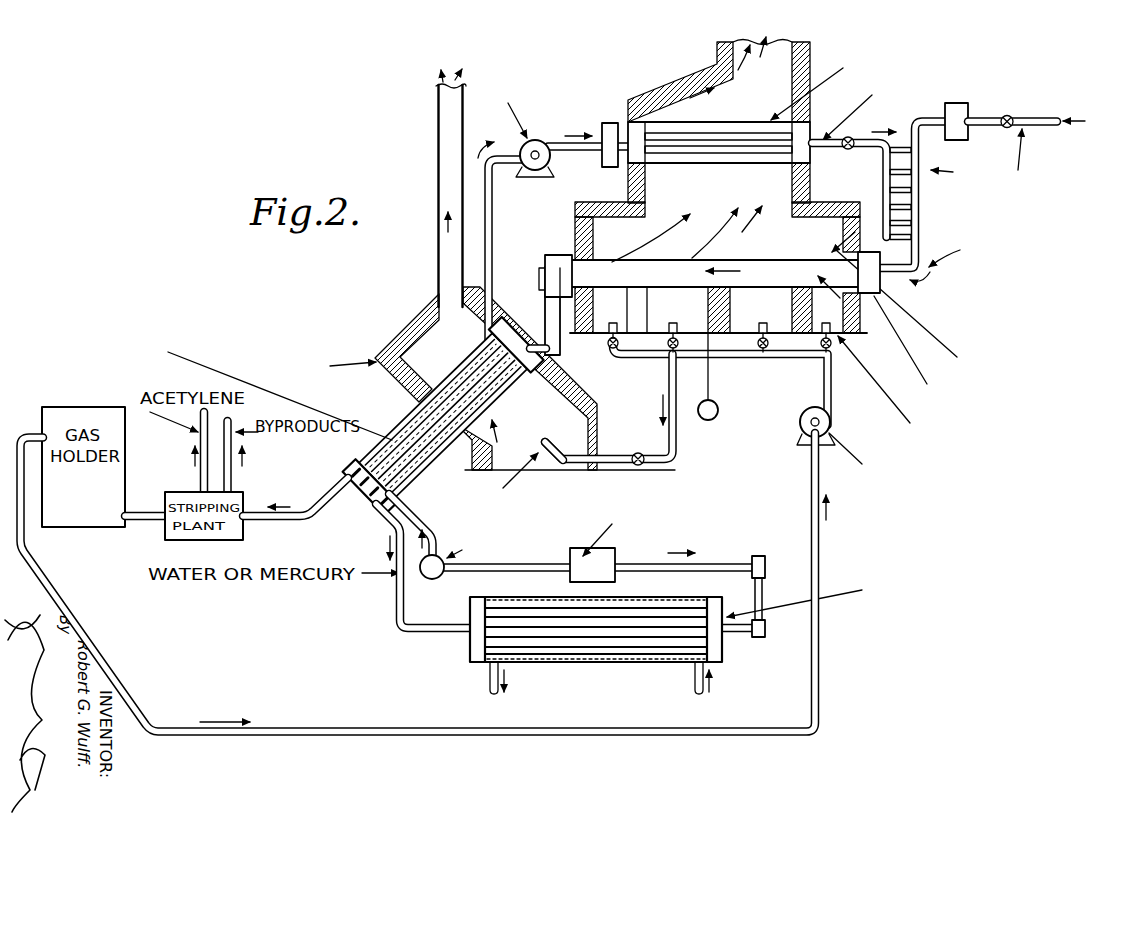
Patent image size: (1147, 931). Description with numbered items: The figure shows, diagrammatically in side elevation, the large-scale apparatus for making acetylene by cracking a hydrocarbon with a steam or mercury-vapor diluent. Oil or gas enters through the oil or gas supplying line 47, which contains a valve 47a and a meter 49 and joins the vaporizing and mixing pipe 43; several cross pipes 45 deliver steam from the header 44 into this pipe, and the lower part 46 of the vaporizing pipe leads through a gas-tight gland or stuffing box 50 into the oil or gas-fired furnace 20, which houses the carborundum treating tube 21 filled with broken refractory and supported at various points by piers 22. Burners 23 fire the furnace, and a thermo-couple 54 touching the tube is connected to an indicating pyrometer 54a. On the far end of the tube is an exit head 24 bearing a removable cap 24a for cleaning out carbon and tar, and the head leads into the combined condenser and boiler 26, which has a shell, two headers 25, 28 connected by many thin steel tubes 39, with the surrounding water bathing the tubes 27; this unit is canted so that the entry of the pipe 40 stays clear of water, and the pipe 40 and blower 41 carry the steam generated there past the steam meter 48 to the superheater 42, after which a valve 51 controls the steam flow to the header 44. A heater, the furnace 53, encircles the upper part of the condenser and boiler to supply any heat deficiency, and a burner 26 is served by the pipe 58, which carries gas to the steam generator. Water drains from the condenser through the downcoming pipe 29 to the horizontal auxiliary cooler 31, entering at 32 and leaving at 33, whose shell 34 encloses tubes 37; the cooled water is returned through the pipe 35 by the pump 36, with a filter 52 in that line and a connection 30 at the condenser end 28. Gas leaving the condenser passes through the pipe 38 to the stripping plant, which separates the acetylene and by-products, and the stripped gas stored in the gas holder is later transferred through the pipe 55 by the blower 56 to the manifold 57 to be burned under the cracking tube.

The furnace 20 is at (877, 325).
The treating tube 21 is at (762, 263).
The piers 22 is at (790, 300).
The burners 23 is at (806, 377).
The exit head 24 is at (557, 257).
The removable cap 24a is at (543, 281).
The header 25 is at (536, 357).
The combined condenser and boiler 26 is at (530, 461).
The tubes of the condenser 27 is at (497, 396).
The header 28 is at (368, 504).
The downcoming pipe 29 is at (393, 600).
The pipe to pump 30 is at (412, 488).
The auxiliary cooler 31 is at (614, 665).
The cooler inlet 32 is at (467, 649).
The cooler outlet 33 is at (731, 653).
The cooler shell 34 is at (643, 654).
The pipe 35 is at (760, 592).
The pump 36 is at (432, 580).
The cooler tubes 37 is at (568, 646).
The gas pipe to stripping plant 38 is at (318, 499).
The tubes 39 is at (476, 386).
The pipe 40 is at (493, 208).
The blower 41 is at (539, 147).
The superheater 42 is at (728, 126).
The vaporizing and mixing pipe 43 is at (953, 176).
The header 44 is at (885, 192).
The cross pipes 45 is at (905, 192).
The lower part of the vaporizing pipe 46 is at (918, 240).
The oil or gas supplying line 47 is at (1041, 127).
The valve 47a is at (1014, 119).
The steam meter 48 is at (606, 165).
The meter 49 is at (966, 139).
The gland or stuffing box 50 is at (867, 294).
The valve 51 is at (855, 138).
The filter 52 is at (600, 561).
The furnace 53 is at (430, 343).
The thermo-couple 54 is at (707, 299).
The indicating pyrometer 54a is at (719, 410).
The pipe 55 is at (821, 497).
The blower 56 is at (830, 423).
The manifold 57 is at (744, 355).
The pipe 58 is at (681, 450).